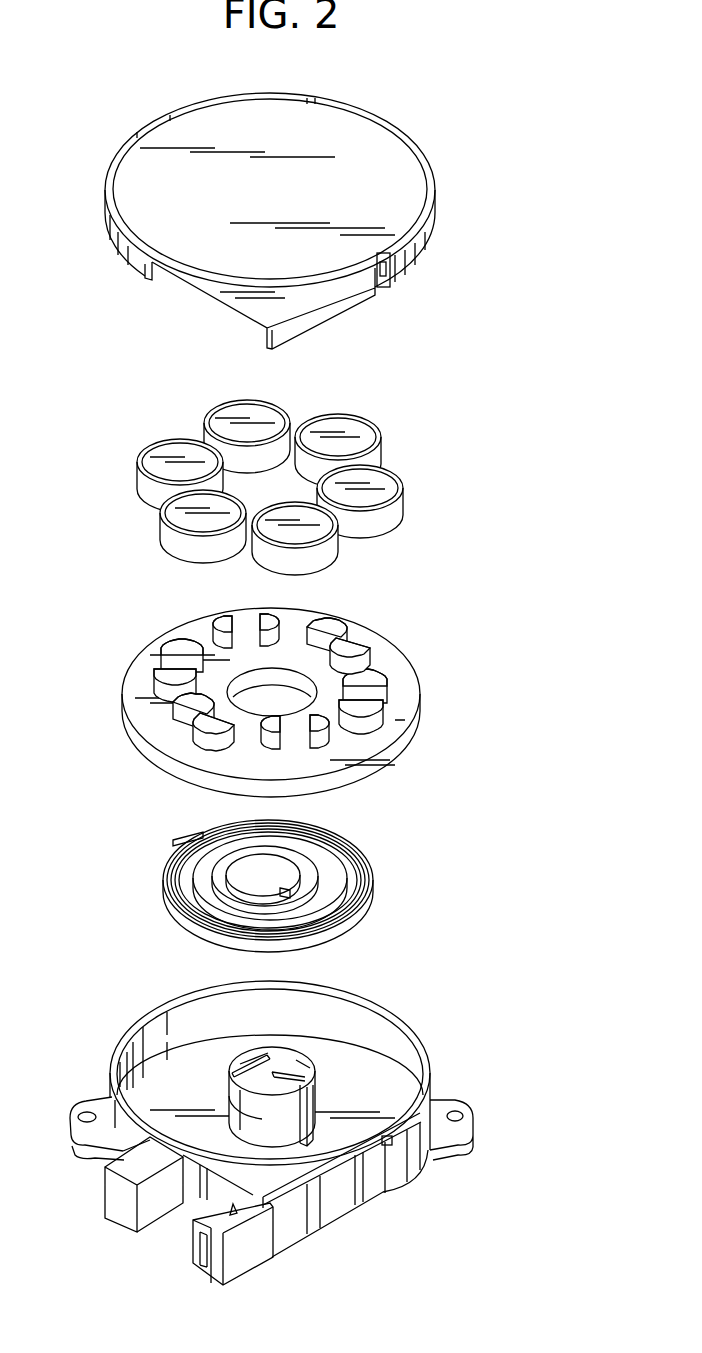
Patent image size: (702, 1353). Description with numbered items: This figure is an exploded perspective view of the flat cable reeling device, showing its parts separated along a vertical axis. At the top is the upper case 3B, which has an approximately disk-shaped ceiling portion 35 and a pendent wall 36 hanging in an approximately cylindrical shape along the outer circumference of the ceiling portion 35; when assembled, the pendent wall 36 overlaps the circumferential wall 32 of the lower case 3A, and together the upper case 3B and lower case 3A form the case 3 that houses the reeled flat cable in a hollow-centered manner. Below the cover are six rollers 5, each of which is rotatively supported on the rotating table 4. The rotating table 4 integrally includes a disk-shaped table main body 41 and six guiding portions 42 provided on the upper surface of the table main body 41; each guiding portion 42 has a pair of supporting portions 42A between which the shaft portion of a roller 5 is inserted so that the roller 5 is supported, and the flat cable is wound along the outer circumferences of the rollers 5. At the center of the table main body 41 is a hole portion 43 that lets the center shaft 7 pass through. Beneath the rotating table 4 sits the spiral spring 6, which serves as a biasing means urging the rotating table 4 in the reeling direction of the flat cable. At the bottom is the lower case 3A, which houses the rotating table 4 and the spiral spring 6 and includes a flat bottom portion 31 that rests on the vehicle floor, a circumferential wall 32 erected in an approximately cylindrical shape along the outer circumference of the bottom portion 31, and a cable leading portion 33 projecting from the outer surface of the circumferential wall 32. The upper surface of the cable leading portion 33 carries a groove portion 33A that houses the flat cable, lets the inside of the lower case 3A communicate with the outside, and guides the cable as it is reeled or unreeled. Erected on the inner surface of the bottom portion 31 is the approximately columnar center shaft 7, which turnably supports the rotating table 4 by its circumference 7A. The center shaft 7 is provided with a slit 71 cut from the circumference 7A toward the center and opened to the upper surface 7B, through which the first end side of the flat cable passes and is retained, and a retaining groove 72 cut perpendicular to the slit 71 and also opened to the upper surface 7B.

The case 3 is at (503, 1263).
The lower case 3A is at (397, 1010).
The upper case 3B is at (365, 100).
The bottom portion 31 is at (375, 1075).
The circumferential wall 32 is at (390, 1095).
The cable leading portion 33 is at (200, 1265).
The groove portion 33A is at (234, 1218).
The ceiling portion 35 is at (397, 160).
The pendent wall 36 is at (422, 236).
The rotating table 4 is at (395, 640).
The table main body 41 is at (373, 665).
The guiding portions 42 is at (205, 633).
The supporting portions 42A is at (385, 675).
The hole portion 43 is at (260, 715).
The rollers 5 is at (225, 415).
The spiral spring 6 is at (375, 872).
The center shaft 7 is at (305, 1065).
The circumference 7A is at (317, 1098).
The upper surface 7B is at (283, 1060).
The slit 71 is at (292, 1068).
The retaining groove 72 is at (245, 1060).